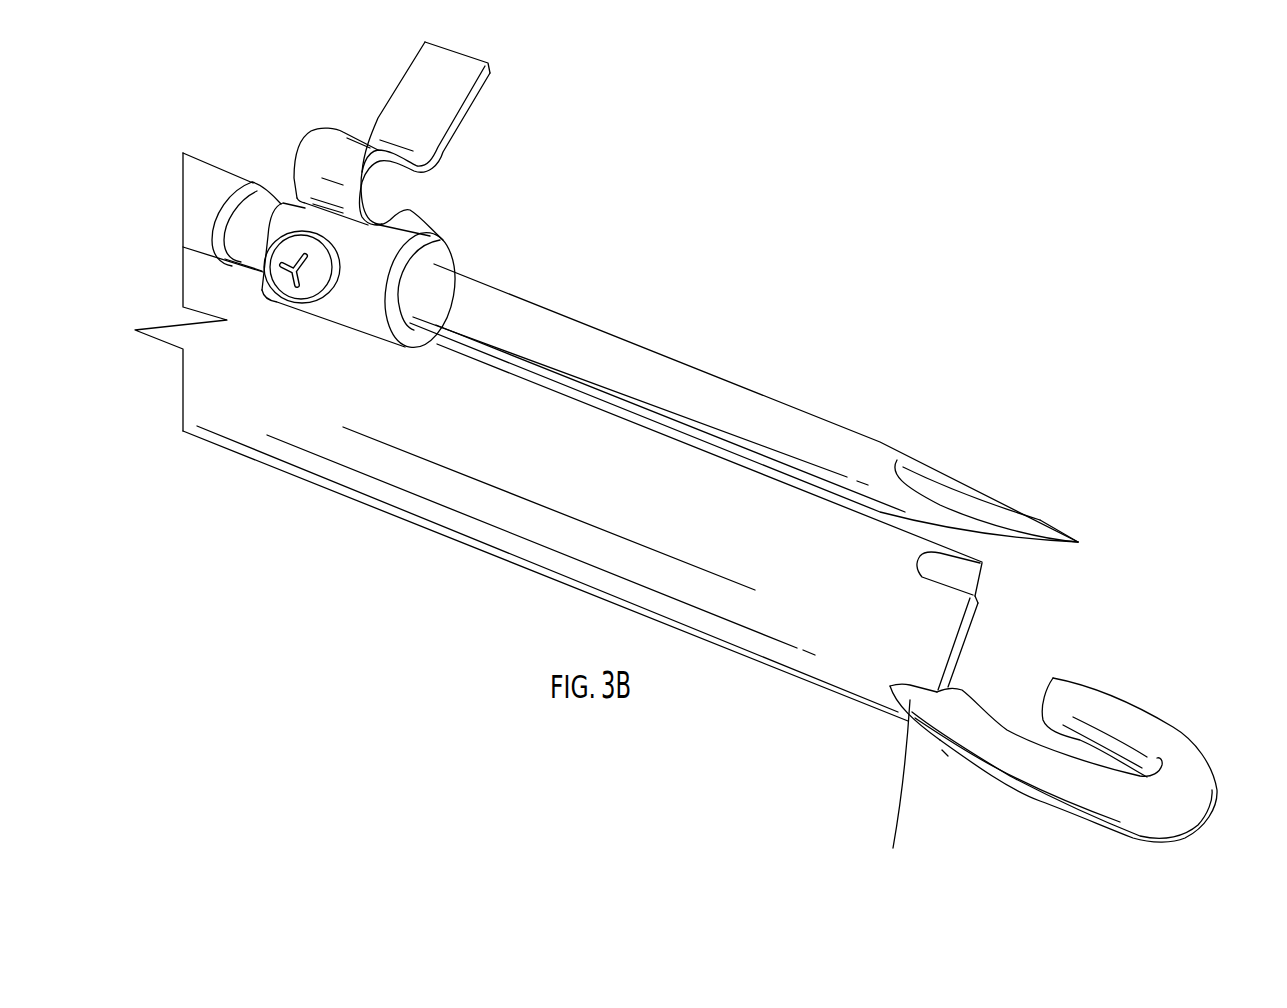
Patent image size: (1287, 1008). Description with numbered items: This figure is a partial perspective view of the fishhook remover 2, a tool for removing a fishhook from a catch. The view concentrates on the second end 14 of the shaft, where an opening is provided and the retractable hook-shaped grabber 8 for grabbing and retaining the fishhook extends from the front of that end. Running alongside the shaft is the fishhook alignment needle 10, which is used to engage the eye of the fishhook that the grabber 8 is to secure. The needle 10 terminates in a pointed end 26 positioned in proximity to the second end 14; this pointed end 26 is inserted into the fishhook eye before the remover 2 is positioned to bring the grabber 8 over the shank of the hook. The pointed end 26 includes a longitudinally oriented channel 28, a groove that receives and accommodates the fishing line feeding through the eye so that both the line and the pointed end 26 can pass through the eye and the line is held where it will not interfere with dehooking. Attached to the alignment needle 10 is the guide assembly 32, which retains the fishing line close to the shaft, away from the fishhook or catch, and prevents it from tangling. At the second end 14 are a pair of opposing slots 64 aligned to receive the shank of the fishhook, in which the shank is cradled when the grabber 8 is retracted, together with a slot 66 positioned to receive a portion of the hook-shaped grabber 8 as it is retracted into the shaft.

The fishhook remover 2 is at (276, 490).
The hook-shaped grabber 8 is at (1197, 793).
The fishhook alignment needle 10 is at (765, 417).
The second end 14 is at (845, 675).
The pointed end 26 is at (1078, 537).
The longitudinally oriented channel 28 is at (983, 508).
The guide assembly 32 is at (328, 158).
The opposing slots 64 is at (950, 578).
The slot 66 is at (909, 784).